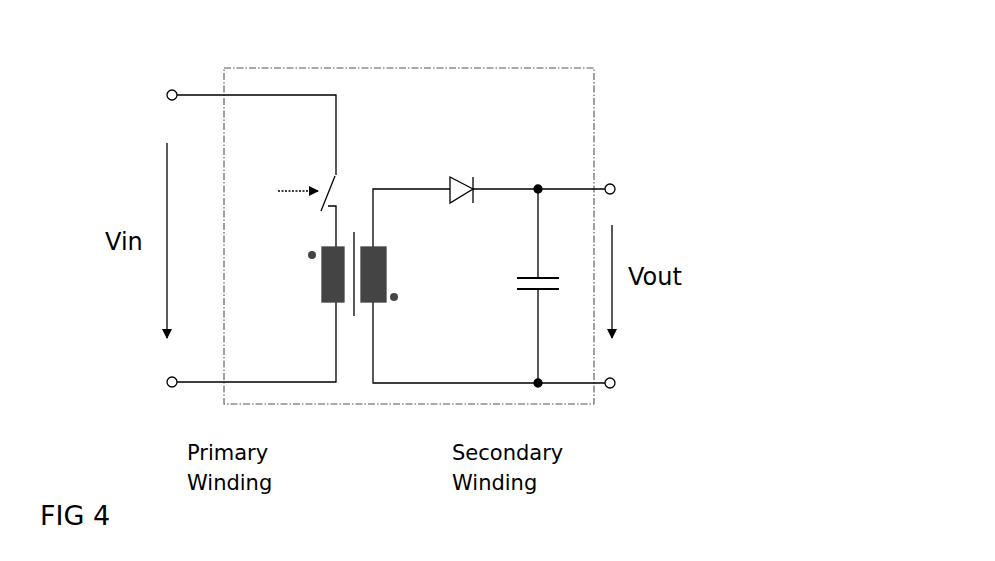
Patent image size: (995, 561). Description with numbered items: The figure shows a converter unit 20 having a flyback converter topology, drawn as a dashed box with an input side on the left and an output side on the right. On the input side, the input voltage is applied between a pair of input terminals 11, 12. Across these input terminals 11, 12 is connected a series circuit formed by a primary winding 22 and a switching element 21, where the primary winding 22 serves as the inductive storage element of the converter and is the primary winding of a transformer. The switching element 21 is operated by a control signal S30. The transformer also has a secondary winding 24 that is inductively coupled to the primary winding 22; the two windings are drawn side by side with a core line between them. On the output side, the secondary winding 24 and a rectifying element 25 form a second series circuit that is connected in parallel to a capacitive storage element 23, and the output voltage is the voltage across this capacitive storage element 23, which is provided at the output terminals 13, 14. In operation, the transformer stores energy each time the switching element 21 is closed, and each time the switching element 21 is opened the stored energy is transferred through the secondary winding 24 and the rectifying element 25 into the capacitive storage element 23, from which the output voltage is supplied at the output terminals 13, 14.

The input terminal 11 is at (167, 90).
The input terminal 12 is at (166, 388).
The output terminal 13 is at (615, 184).
The output terminal 14 is at (616, 388).
The converter unit 20 is at (478, 68).
The switching element 21 is at (327, 170).
The primary winding 22 is at (268, 442).
The capacitive storage element 23 is at (546, 276).
The secondary winding 24 is at (487, 433).
The rectifying element 25 is at (456, 176).
The switch control signal S30 is at (283, 178).